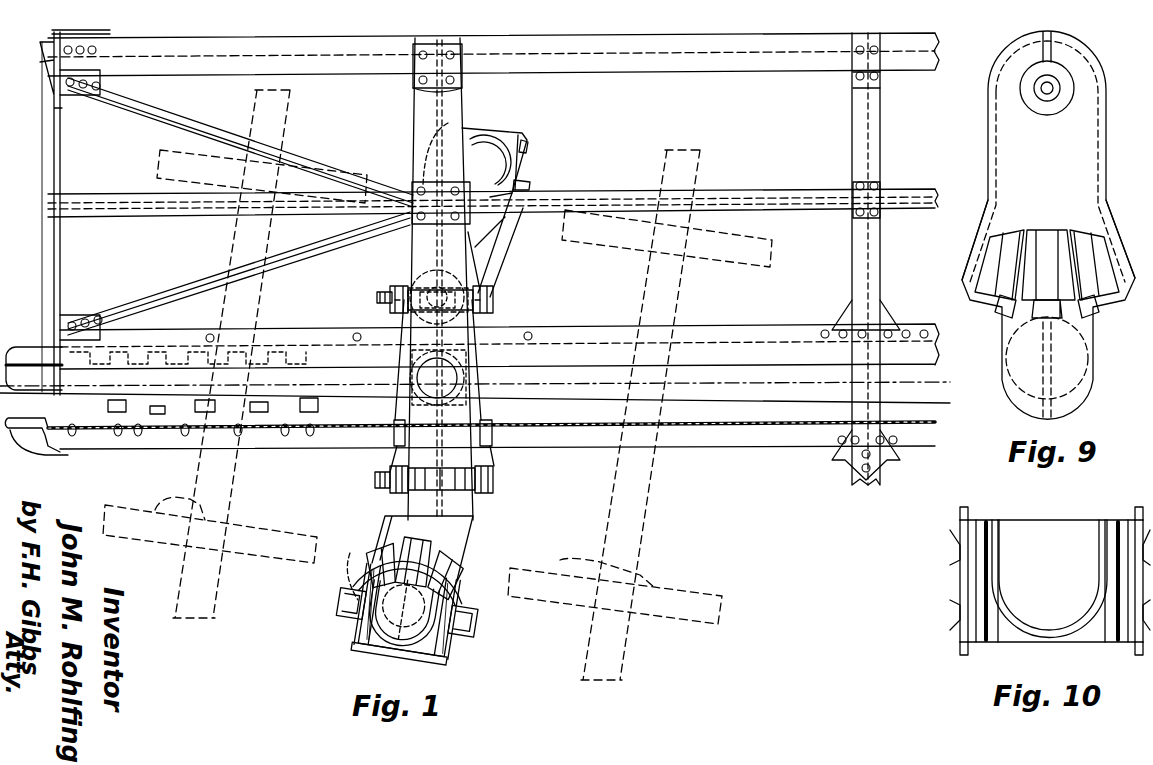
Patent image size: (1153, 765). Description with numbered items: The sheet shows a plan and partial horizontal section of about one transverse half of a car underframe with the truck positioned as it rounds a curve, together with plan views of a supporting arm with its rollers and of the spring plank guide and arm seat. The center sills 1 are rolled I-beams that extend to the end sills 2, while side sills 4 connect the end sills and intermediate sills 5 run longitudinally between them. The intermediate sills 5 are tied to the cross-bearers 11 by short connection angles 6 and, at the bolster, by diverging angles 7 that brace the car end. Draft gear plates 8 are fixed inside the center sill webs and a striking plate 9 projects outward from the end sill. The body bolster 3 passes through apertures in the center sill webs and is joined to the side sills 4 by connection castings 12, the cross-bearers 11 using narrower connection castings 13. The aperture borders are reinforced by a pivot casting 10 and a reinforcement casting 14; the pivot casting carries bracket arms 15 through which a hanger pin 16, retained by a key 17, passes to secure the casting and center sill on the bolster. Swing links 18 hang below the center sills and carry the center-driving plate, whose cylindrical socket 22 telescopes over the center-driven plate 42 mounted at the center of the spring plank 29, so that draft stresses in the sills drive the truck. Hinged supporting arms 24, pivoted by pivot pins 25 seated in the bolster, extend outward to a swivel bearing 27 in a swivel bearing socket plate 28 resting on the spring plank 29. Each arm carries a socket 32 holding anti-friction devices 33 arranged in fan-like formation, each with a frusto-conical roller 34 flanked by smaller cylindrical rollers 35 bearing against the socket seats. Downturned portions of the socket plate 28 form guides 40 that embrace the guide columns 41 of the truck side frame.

In FIG. 1, the center sills 1 is at (758, 355).
In FIG. 1, the end sills 2 is at (46, 281).
In FIG. 1, the body bolster 3 is at (412, 124).
In FIG. 1, the side sills 4 is at (683, 46).
In FIG. 1, the intermediate sills 5 is at (785, 193).
In FIG. 1, the connection angles 6 is at (852, 186).
In FIG. 1, the angles 7 is at (330, 162).
In FIG. 1, the draft gear plates 8 is at (205, 372).
In FIG. 1, the striking plate 9 is at (26, 356).
In FIG. 1, the pivot casting 10 is at (400, 318).
In FIG. 1, the cross-bearers 11 is at (858, 124).
In FIG. 1, the connection castings 12 is at (456, 88).
In FIG. 1, the connection castings 13 is at (852, 80).
In FIG. 1, the reinforcement casting 14 is at (405, 375).
In FIG. 1, the bracket arms 15 is at (392, 298).
In FIG. 1, the hanger pin 16 is at (393, 290).
In FIG. 1, the key 17 is at (376, 296).
In FIG. 1, the swing links 18 is at (392, 288).
In FIG. 1, the cylindrical socket 22 is at (470, 397).
In FIG. 1, the supporting arms 24 is at (507, 198).
In FIG. 9, the supporting arms 24 is at (1055, 172).
In FIG. 1, the pivot pins 25 is at (445, 288).
In FIG. 1, the swivel bearing 27 is at (370, 648).
In FIG. 9, the swivel bearing 27 is at (1040, 345).
In FIG. 1, the swivel bearing socket plate 28 is at (510, 132).
In FIG. 10, the swivel bearing socket plate 28 is at (1020, 630).
In FIG. 1, the spring plank 29 is at (503, 244).
In FIG. 1, the sockets 32 is at (540, 210).
In FIG. 9, the sockets 32 is at (975, 245).
In FIG. 1, the anti-friction devices 33 is at (540, 212).
In FIG. 9, the anti-friction devices 33 is at (1108, 240).
In FIG. 9, the frusto-conical roller 34 is at (1047, 265).
In FIG. 9, the cylindrical rollers 35 is at (1072, 230).
In FIG. 1, the guides 40 is at (532, 148).
In FIG. 10, the guides 40 is at (1145, 515).
In FIG. 1, the guide columns 41 is at (336, 609).
In FIG. 1, the center-driven plate 42 is at (408, 397).